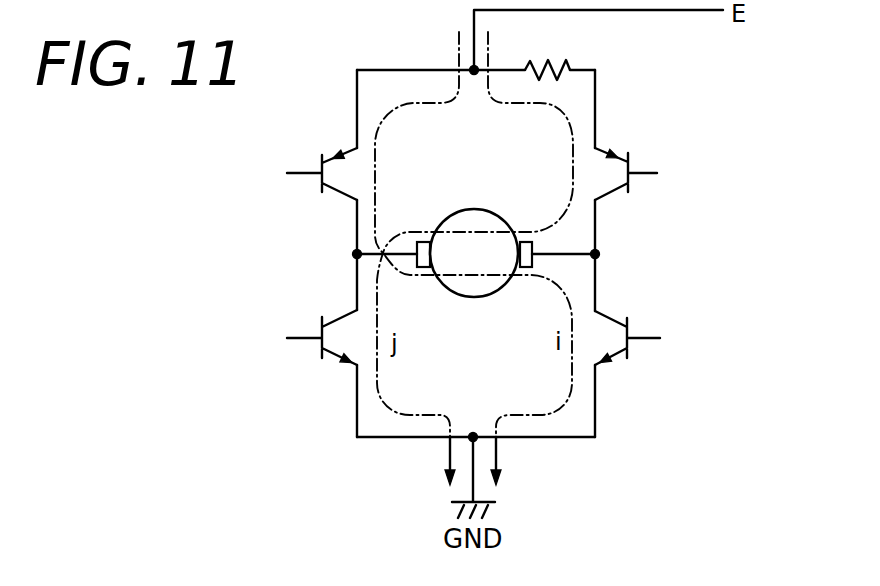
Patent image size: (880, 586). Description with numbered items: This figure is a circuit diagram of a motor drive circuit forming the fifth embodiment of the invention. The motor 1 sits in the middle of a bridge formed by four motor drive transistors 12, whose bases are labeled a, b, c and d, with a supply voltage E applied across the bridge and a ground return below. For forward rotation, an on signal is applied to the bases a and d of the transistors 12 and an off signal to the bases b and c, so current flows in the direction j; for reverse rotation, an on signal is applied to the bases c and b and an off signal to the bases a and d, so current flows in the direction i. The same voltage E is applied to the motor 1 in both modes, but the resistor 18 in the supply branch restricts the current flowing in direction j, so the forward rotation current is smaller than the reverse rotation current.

The motor 1 is at (485, 220).
The motor drive transistors 12 is at (340, 196).
The resistor 18 is at (570, 62).